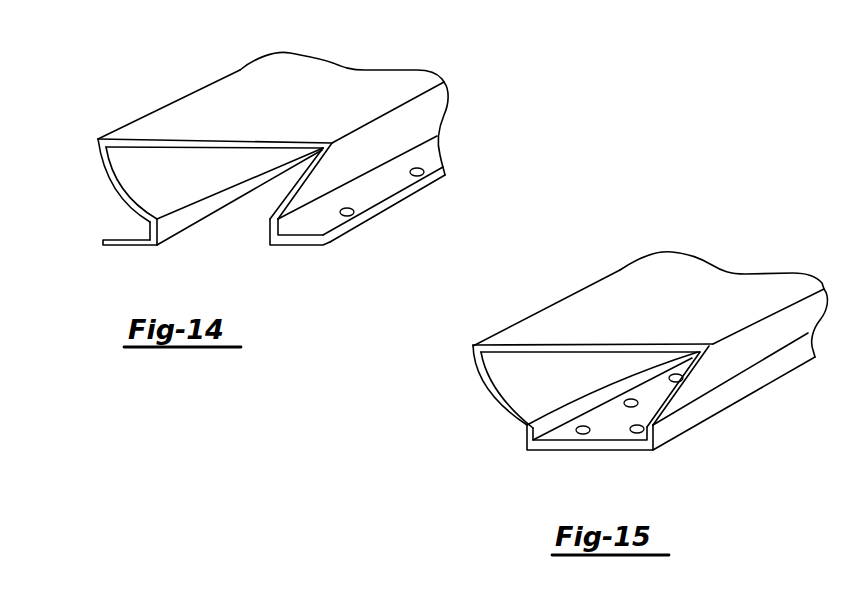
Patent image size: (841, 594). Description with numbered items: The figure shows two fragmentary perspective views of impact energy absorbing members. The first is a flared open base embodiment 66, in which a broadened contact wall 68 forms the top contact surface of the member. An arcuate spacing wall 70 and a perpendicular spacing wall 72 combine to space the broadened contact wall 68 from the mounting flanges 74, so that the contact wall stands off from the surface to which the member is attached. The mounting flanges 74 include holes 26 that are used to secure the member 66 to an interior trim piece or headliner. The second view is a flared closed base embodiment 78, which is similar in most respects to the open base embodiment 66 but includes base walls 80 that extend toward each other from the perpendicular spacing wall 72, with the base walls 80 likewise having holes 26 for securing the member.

In FIG. 14, the flared open base embodiment 66 is at (186, 96).
In FIG. 14, the broadened contact wall 68 is at (342, 92).
In FIG. 15, the broadened contact wall 68 is at (735, 293).
In FIG. 14, the arcuate spacing wall 70 is at (428, 118).
In FIG. 15, the arcuate spacing wall 70 is at (523, 378).
In FIG. 14, the perpendicular spacing wall 72 is at (170, 231).
In FIG. 15, the perpendicular spacing wall 72 is at (547, 428).
In FIG. 14, the mounting flanges 74 is at (134, 229).
In FIG. 14, the holes 26 is at (428, 166).
In FIG. 15, the holes 26 is at (580, 432).
In FIG. 15, the flared closed base embodiment 78 is at (594, 293).
In FIG. 15, the base walls 80 is at (630, 450).